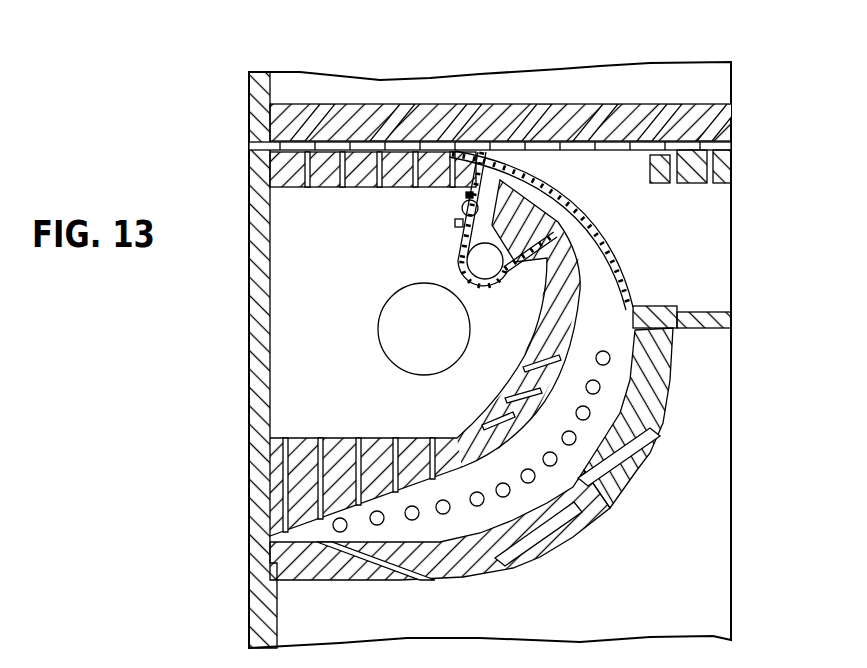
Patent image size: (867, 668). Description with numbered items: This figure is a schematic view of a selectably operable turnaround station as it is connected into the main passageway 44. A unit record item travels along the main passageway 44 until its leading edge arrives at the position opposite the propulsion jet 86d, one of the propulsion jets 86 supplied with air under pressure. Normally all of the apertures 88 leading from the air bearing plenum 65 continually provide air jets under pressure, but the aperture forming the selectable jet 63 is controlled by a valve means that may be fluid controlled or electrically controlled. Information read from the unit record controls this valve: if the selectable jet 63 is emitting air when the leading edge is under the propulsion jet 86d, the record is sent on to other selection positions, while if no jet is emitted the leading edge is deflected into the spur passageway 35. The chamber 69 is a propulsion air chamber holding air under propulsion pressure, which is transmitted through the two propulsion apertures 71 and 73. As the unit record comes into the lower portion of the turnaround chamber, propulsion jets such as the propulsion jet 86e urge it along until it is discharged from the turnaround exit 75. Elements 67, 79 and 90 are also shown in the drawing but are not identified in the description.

The propulsion jets 86 is at (345, 106).
The propulsion jet 86d is at (407, 106).
The propulsion jet 86e is at (650, 434).
The gaps between segments 90 is at (523, 106).
The main passageway 44 is at (250, 147).
The apertures 88 is at (373, 188).
The selectable jet 63 is at (466, 199).
The block 67 is at (457, 223).
The chamber 69 is at (467, 261).
The propulsion aperture 73 is at (511, 197).
The propulsion aperture 71 is at (547, 216).
The air bearing plenum 65 is at (304, 313).
The spur passageway 35 is at (594, 347).
The holes 79 is at (596, 395).
The turnaround exit 75 is at (258, 541).